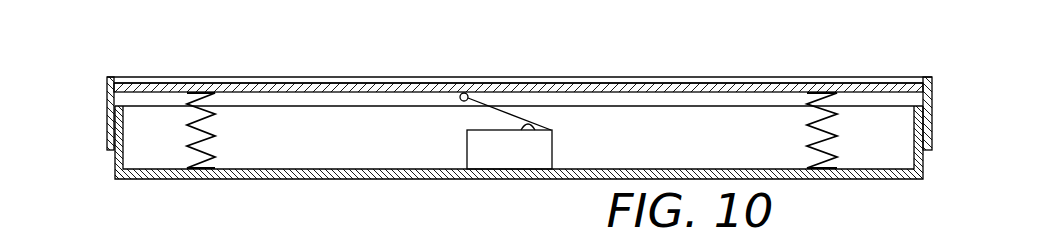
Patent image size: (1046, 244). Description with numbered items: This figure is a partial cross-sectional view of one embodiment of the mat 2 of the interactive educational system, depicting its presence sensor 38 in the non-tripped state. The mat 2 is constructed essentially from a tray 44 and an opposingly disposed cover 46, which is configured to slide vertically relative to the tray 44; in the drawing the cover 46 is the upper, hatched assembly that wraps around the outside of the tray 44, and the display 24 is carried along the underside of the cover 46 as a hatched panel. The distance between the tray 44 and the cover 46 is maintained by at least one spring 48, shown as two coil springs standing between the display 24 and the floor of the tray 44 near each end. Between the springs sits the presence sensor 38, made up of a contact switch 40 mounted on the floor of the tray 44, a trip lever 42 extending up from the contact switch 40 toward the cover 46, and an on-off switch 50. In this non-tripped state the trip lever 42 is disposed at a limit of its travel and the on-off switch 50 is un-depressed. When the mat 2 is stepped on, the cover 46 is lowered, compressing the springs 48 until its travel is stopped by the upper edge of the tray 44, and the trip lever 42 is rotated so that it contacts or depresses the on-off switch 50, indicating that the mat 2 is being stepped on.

The mat 2 is at (704, 56).
The display 24 is at (363, 76).
The presence sensor 38 is at (518, 40).
The contact switch 40 is at (555, 153).
The trip lever 42 is at (502, 108).
The tray 44 is at (395, 180).
The cover 46 is at (106, 100).
The spring 48 is at (204, 153).
The on-off switch 50 is at (522, 124).